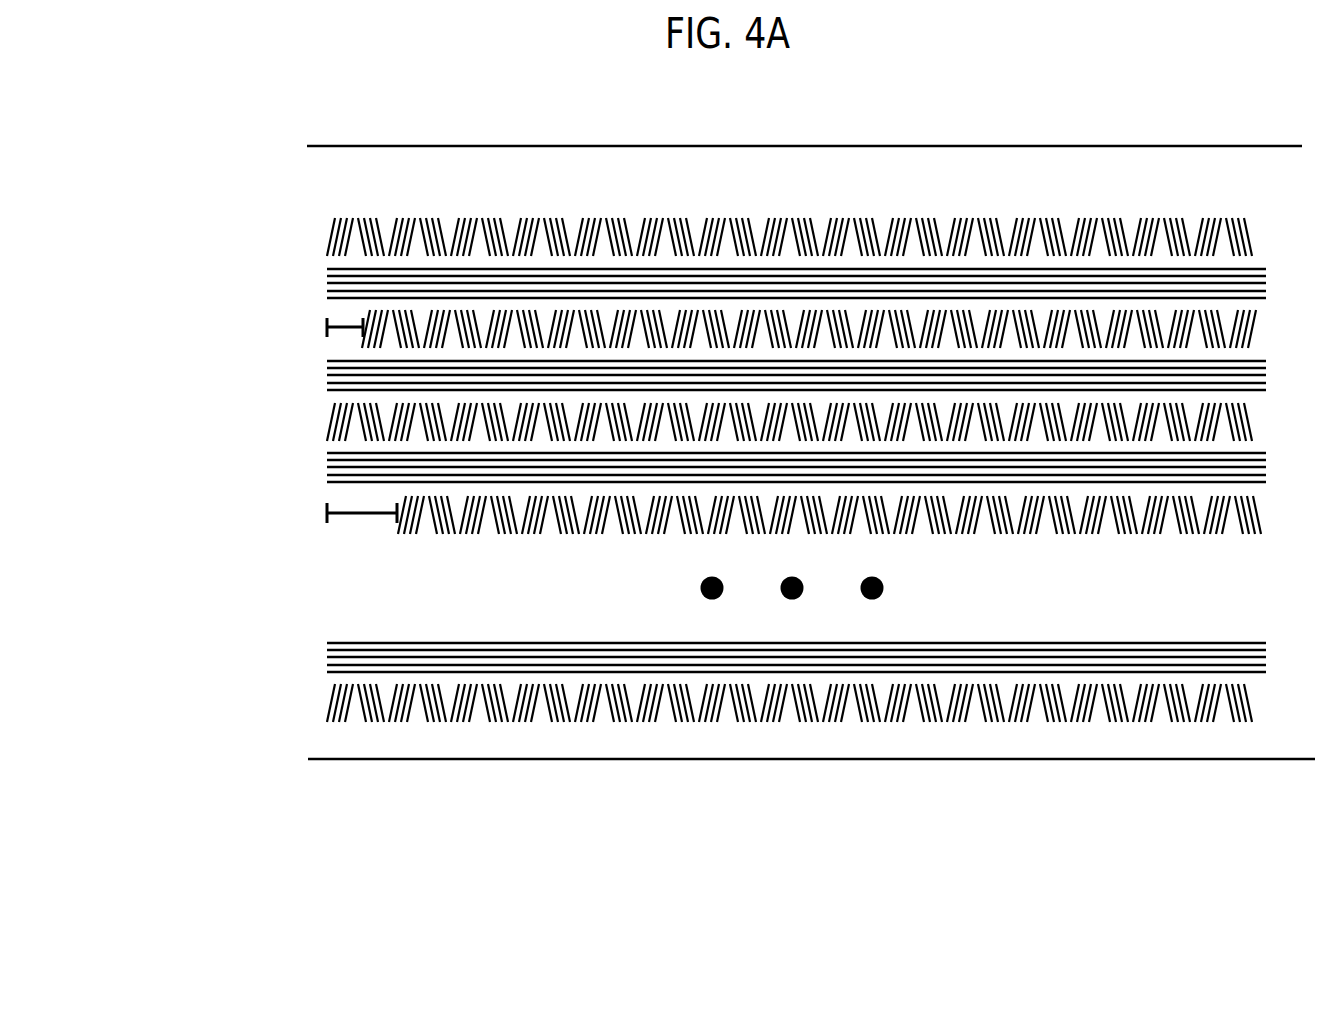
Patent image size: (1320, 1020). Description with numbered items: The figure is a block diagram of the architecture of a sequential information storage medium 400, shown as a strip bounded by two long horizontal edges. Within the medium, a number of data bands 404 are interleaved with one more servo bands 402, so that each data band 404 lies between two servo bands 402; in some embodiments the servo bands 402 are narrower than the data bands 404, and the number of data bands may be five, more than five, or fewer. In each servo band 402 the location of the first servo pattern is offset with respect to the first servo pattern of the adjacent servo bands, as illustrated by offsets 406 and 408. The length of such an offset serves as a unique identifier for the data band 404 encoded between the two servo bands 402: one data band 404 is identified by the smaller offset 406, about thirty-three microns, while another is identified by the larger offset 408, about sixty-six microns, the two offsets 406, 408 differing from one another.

The sequential information storage medium 400 is at (730, 782).
The servo band 402 is at (684, 470).
The data band 404 is at (686, 470).
The offset 406 is at (352, 308).
The offset 408 is at (357, 535).